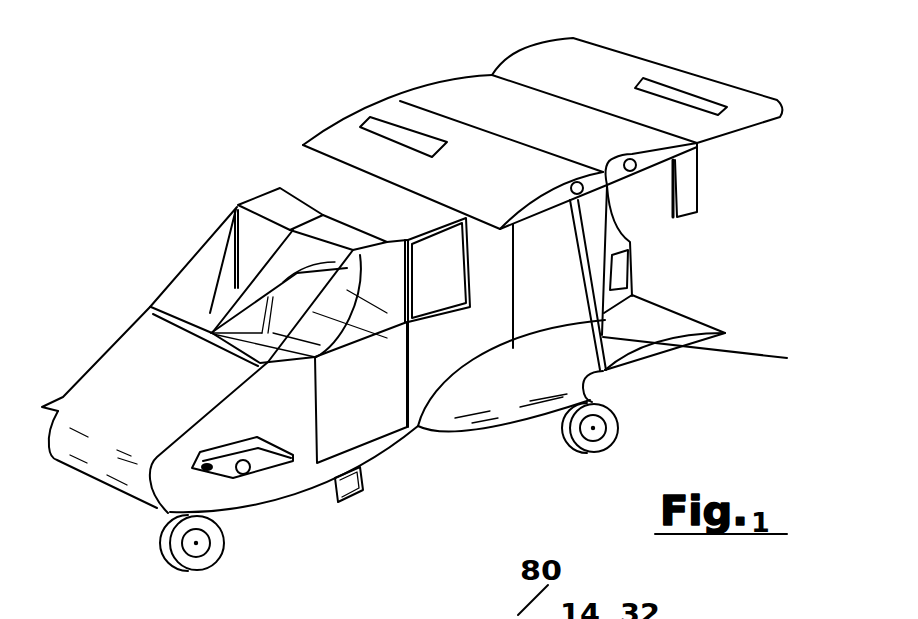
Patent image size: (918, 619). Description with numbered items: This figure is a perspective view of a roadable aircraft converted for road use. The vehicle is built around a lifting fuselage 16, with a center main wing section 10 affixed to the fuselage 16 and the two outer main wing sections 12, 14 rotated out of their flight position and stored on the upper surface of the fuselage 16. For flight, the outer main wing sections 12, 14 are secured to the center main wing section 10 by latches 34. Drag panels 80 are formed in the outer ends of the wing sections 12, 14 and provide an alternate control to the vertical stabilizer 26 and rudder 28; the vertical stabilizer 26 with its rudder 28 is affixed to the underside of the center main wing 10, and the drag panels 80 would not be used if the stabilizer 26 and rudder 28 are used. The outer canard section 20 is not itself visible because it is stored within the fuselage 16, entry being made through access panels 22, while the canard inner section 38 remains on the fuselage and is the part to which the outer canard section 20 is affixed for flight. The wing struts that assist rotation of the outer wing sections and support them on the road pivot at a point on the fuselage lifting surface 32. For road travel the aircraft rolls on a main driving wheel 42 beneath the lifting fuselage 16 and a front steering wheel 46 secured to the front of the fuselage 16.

The center main wing section 10 is at (458, 98).
The outer main wing section 12 is at (397, 113).
The outer main wing section 14 is at (567, 53).
The fuselage 16 is at (388, 443).
The outer canard section 20 is at (60, 395).
The access panel 22 is at (628, 270).
The vertical stabilizer 26 is at (650, 198).
The rudder 28 is at (685, 177).
The fuselage lifting surface 32 is at (607, 183).
The latch 34 is at (607, 368).
The canard inner section 38 is at (263, 462).
The main driving wheel 42 is at (610, 445).
The front steering wheel 46 is at (210, 552).
The drag panel 80 is at (387, 128).